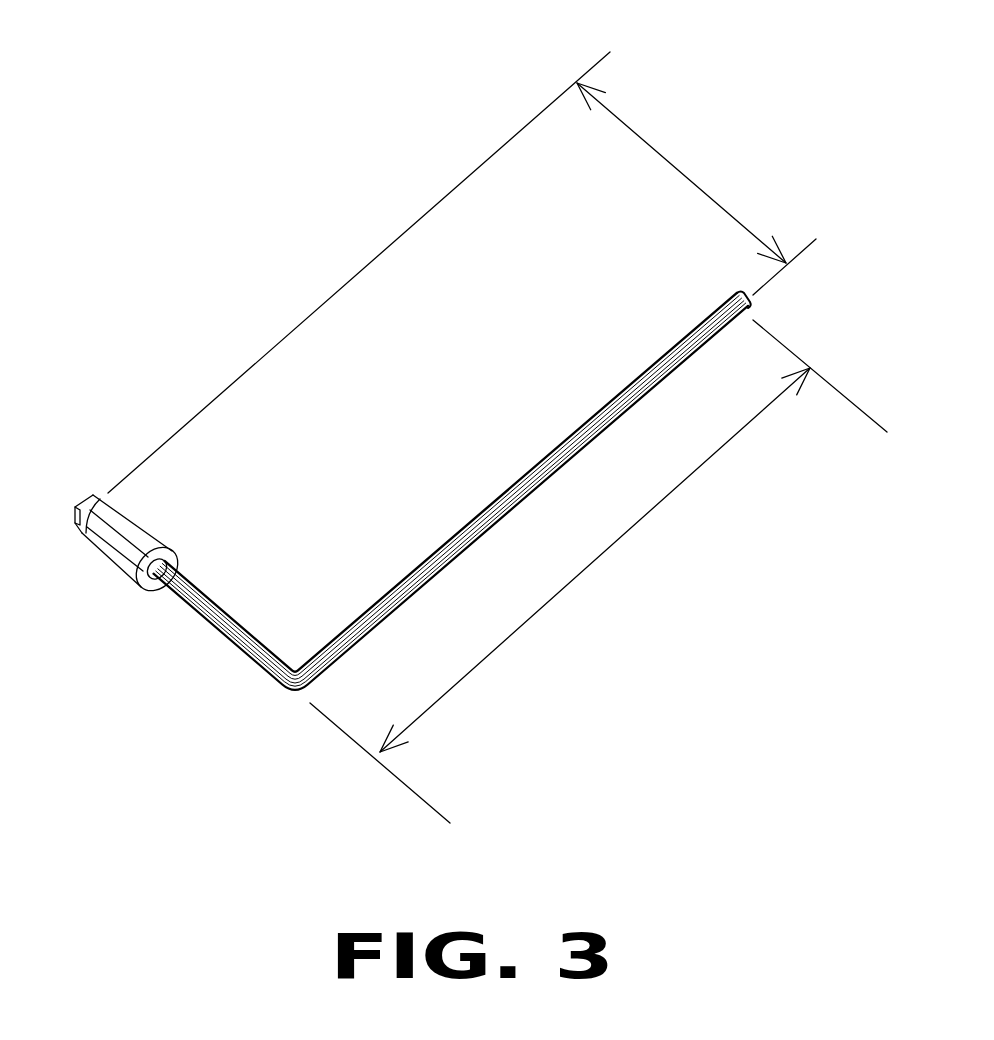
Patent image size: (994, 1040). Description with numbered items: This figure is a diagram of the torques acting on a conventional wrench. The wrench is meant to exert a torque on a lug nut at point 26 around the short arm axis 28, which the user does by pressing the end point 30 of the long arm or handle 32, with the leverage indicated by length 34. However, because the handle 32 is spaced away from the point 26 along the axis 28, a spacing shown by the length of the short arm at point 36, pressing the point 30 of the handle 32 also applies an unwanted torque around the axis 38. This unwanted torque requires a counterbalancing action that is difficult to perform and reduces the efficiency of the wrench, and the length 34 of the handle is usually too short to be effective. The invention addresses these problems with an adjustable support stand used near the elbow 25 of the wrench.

The elbow 25 is at (452, 480).
The point 26 is at (92, 488).
The short arm axis 28 is at (401, 782).
The end point 30 is at (713, 298).
The long arm or handle 32 is at (537, 472).
The length 34 is at (633, 536).
The point 36 is at (696, 189).
The axis 38 is at (379, 255).